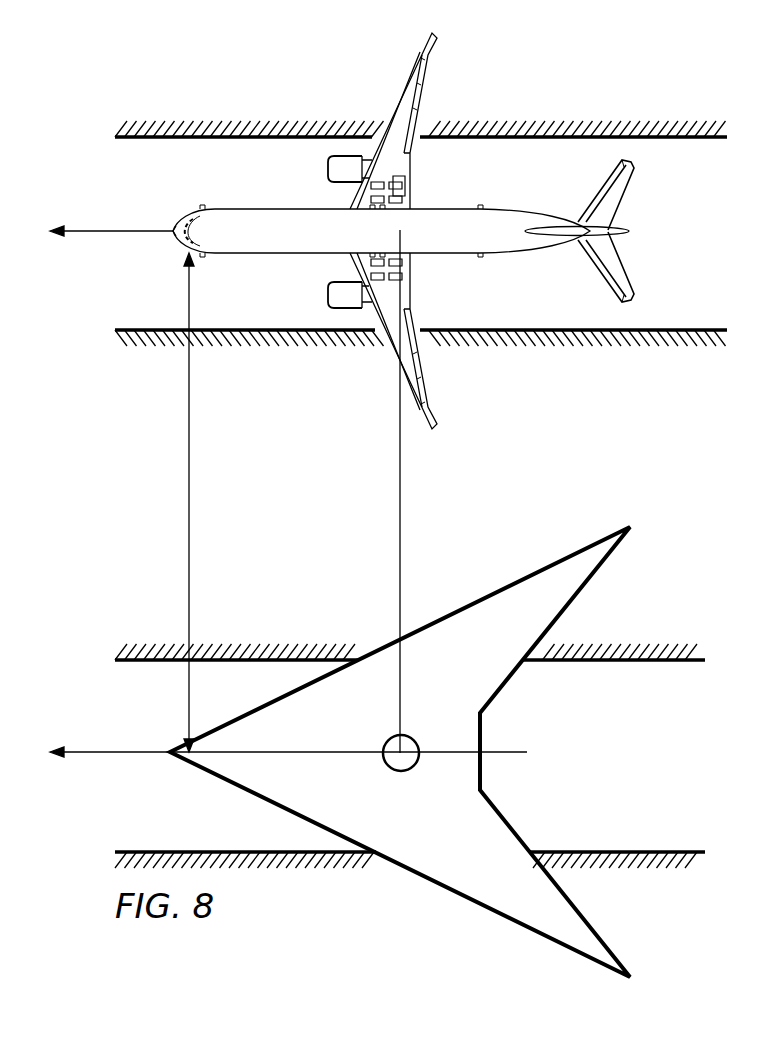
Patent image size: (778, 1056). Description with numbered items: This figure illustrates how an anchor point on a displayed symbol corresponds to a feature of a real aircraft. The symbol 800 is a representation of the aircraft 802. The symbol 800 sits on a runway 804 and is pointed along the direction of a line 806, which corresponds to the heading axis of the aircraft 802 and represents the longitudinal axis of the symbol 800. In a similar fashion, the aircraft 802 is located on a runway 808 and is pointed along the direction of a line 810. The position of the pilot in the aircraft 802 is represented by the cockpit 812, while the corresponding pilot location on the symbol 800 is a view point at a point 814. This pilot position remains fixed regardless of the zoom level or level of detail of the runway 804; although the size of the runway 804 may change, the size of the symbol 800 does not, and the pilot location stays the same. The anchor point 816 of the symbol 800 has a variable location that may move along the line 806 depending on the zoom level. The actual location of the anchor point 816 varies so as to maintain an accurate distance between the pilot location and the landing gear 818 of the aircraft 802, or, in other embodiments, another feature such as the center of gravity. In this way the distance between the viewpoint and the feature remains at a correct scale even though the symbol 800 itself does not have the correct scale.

The symbol 800 is at (455, 889).
The aircraft 802 is at (402, 90).
The runway 804 is at (639, 768).
The line 806 is at (88, 754).
The runway 808 is at (702, 248).
The line 810 is at (117, 232).
The cockpit 812 is at (171, 226).
The point 814 is at (168, 755).
The anchor point 816 is at (388, 740).
The landing gear 818 is at (414, 186).